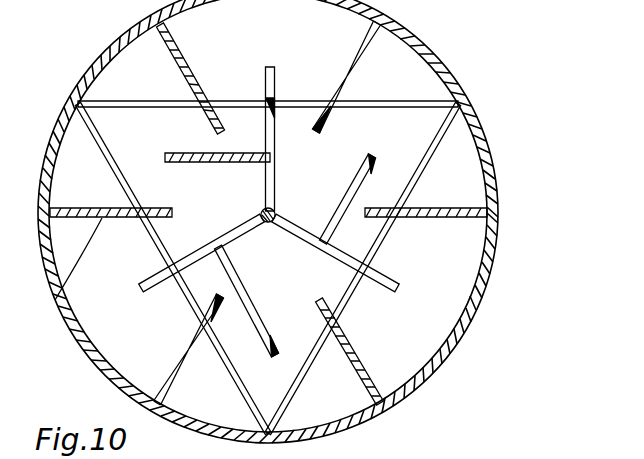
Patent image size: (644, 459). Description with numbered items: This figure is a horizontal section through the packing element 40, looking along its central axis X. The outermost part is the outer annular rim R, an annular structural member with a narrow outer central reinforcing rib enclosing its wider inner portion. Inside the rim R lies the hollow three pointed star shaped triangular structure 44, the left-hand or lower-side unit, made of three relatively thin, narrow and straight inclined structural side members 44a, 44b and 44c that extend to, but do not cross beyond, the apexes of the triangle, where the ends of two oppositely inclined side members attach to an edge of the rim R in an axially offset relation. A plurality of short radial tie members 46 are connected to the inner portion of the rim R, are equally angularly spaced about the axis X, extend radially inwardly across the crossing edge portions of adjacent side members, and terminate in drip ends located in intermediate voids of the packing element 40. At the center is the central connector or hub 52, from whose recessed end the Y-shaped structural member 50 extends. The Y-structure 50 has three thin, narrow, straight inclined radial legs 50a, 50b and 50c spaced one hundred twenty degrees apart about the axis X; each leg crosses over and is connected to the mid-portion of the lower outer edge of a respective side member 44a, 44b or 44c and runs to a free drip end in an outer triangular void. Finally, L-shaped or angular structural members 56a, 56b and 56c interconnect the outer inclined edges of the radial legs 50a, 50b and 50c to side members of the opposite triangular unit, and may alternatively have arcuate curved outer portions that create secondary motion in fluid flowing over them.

The packing element 40 is at (402, 28).
The radial tie members 46 is at (357, 70).
The triangular structure 44 is at (278, 242).
The structural side member 44a is at (103, 152).
The structural side member 44b is at (418, 180).
The structural side member 44c is at (427, 101).
The Y-shaped structural member 50 is at (284, 179).
The radial structural member 50a is at (268, 78).
The radial structural member 50b is at (158, 288).
The radial structural member 50c is at (401, 286).
The central connector or hub 52 is at (270, 222).
The L-shaped structural member 56a is at (200, 152).
The L-shaped structural member 56b is at (280, 314).
The L-shaped structural member 56c is at (366, 177).
The outer annular rim R is at (486, 281).
The central axis x is at (276, 213).